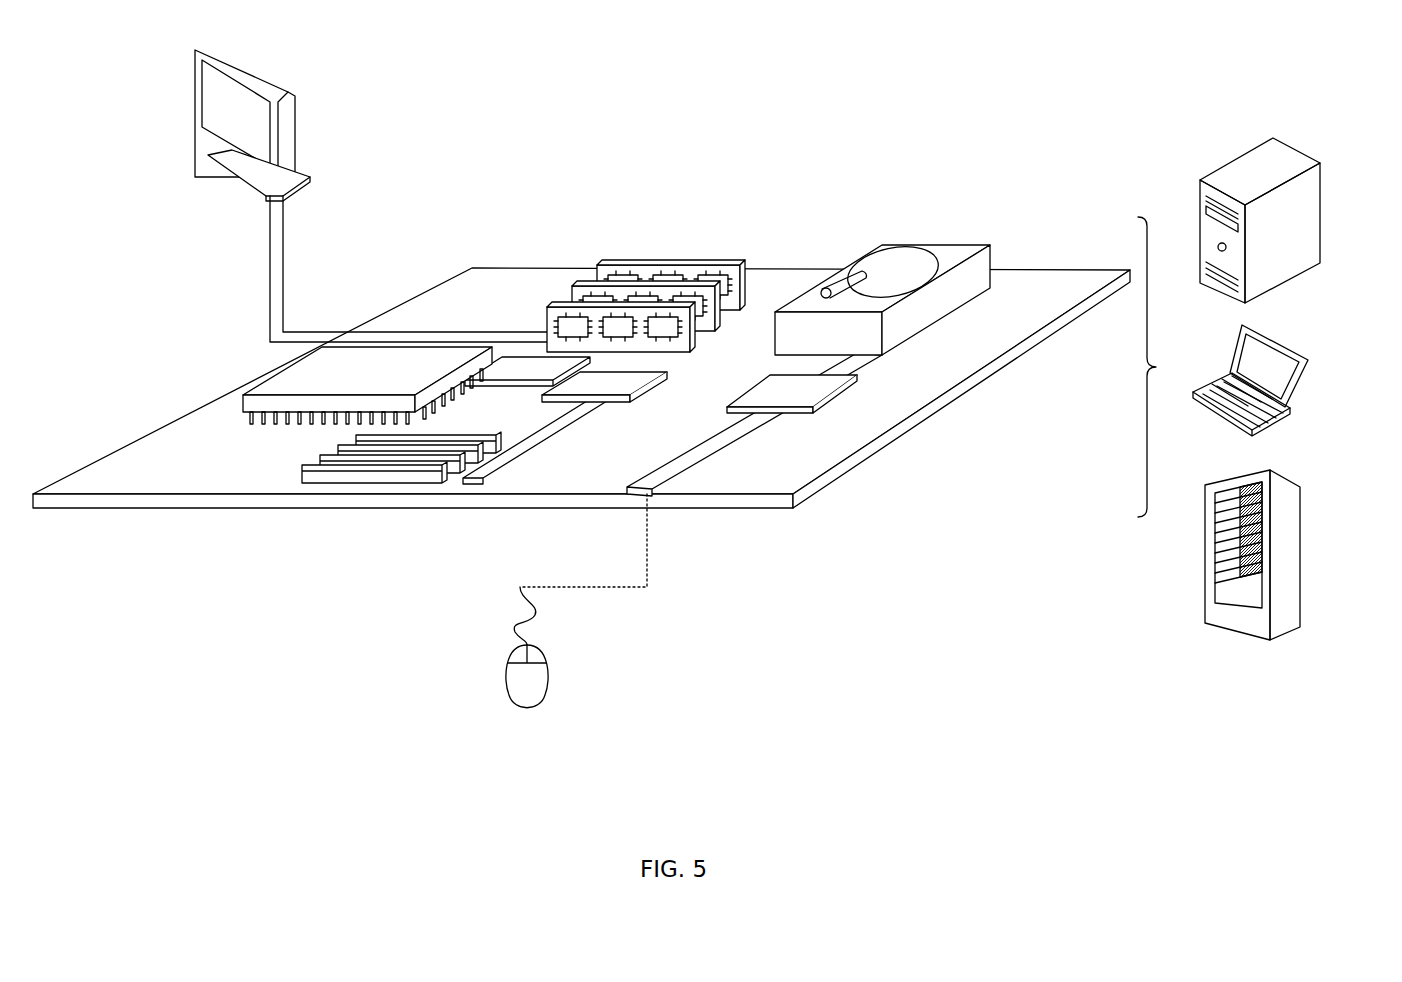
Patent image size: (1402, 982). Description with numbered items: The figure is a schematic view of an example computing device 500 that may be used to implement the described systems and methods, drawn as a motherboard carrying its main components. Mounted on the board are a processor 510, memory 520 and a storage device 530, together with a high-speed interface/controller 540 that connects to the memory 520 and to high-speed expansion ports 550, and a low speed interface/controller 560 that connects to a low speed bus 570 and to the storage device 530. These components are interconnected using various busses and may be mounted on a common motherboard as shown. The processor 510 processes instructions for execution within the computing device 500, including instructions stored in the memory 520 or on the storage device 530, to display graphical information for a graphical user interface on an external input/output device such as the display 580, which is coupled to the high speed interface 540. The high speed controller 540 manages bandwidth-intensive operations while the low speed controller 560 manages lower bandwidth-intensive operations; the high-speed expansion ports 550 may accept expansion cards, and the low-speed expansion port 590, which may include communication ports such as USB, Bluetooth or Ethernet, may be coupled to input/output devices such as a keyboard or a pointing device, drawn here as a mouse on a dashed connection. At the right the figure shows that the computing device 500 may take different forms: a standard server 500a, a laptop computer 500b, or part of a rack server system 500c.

The computing device 500 is at (747, 124).
The standard server 500a is at (1232, 158).
The laptop computer 500b is at (1285, 346).
The rack server system 500c is at (1295, 531).
The processor 510 is at (238, 397).
The memory 520 is at (663, 260).
The storage device 530 is at (930, 242).
The high-speed interface/controller 540 is at (610, 405).
The high-speed expansion ports 550 is at (303, 470).
The low speed interface/controller 560 is at (780, 382).
The low speed bus 570 is at (735, 443).
The display 580 is at (193, 95).
The low-speed expansion port 590 is at (668, 502).